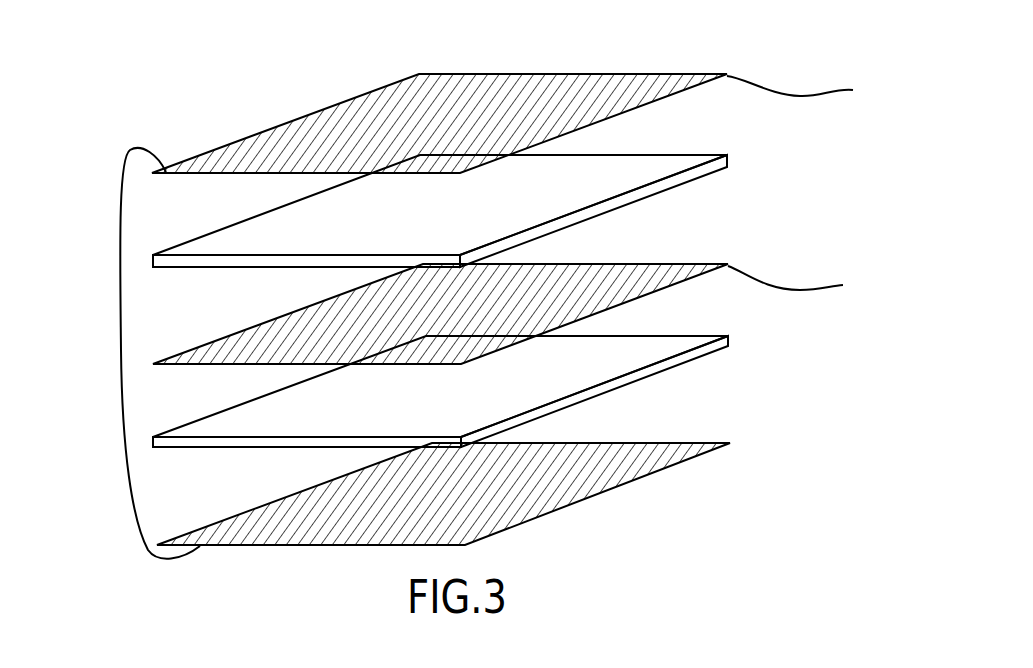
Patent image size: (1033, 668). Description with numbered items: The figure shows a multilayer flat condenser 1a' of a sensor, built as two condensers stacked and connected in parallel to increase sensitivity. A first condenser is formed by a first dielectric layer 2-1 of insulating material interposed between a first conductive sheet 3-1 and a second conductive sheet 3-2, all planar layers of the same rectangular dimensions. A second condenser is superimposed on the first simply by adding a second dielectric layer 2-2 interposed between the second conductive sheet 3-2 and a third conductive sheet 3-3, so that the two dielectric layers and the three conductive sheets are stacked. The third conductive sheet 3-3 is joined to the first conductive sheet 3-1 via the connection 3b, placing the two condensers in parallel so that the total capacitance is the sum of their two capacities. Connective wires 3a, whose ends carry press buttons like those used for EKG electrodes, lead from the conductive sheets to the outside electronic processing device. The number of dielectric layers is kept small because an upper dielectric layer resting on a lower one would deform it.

The multilayer flat condenser 1a' is at (460, 290).
The first conductive sheet 3-1 is at (647, 82).
The first dielectric layer 2-1 is at (686, 164).
The second conductive sheet 3-2 is at (669, 271).
The second dielectric layer 2-2 is at (683, 345).
The third conductive sheet 3-3 is at (678, 457).
The connective wires 3a is at (812, 94).
The connection between third and first sheets 3b is at (120, 351).